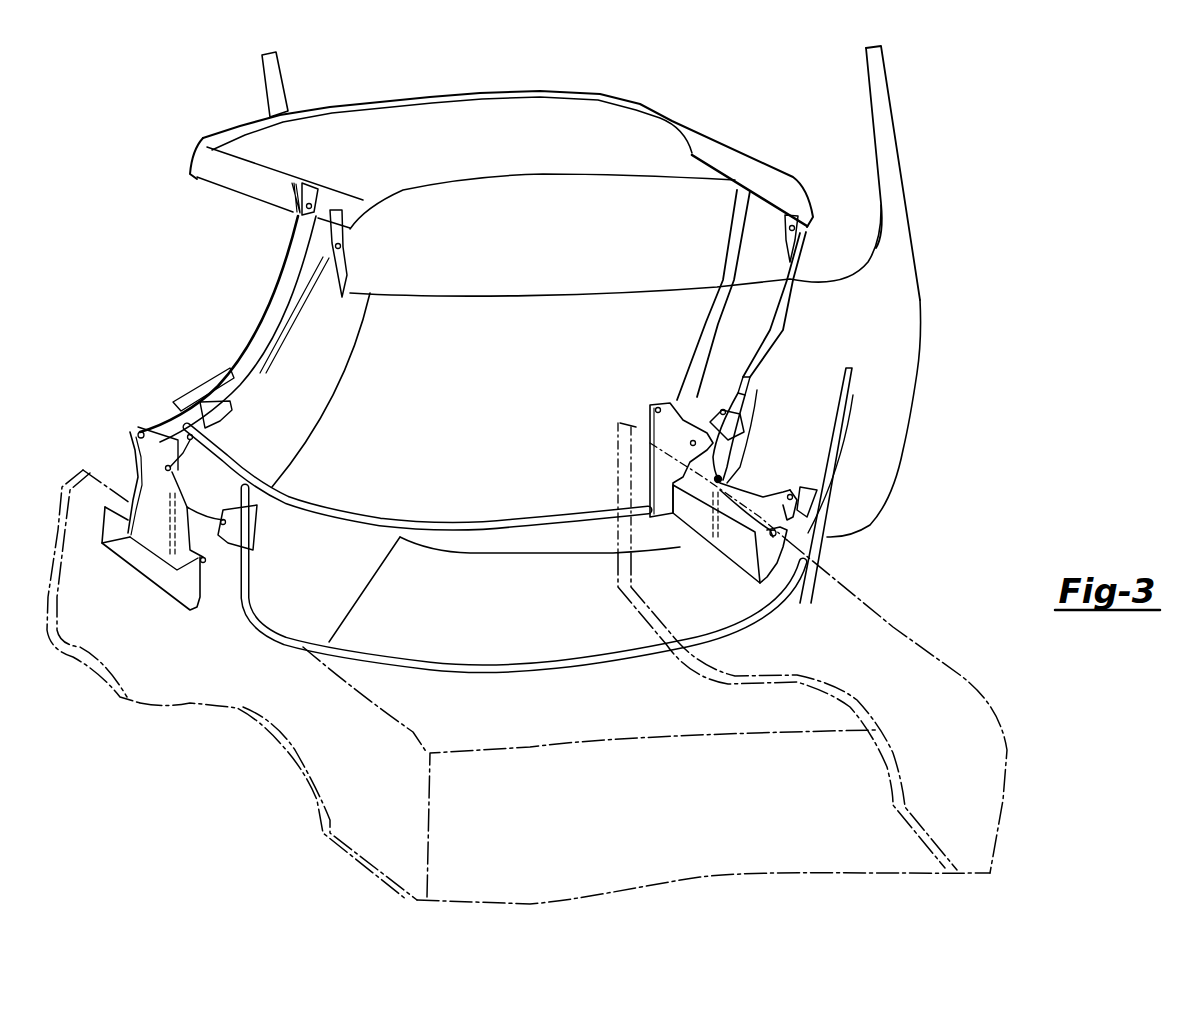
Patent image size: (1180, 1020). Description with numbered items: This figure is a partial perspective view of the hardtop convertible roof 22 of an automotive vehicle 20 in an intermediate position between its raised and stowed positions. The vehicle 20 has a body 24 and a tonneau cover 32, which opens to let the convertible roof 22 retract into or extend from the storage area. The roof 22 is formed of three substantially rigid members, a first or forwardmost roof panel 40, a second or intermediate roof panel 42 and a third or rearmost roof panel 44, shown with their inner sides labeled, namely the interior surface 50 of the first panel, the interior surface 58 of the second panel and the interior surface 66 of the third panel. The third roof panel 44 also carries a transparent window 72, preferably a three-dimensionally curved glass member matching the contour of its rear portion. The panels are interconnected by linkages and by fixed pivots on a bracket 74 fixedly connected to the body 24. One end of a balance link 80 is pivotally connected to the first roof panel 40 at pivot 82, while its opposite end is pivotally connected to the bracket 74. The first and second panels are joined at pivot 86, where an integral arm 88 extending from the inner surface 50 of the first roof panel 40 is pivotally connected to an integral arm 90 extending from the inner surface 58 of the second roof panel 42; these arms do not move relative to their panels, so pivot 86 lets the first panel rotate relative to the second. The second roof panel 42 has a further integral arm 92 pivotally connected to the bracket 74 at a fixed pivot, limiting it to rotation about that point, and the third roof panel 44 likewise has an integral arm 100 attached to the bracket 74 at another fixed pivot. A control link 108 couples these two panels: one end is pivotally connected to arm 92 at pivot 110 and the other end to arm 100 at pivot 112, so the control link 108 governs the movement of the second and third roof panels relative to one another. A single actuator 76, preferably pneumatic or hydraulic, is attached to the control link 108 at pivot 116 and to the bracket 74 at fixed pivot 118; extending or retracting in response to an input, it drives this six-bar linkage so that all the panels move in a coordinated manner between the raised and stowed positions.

The automotive vehicle 20 is at (534, 474).
The hardtop convertible roof 22 is at (538, 381).
The body 24 is at (937, 689).
The tonneau cover 32 is at (908, 261).
The first roof panel 40 is at (608, 130).
The second roof panel 42 is at (382, 402).
The third roof panel 44 is at (415, 615).
The inner surface 50 is at (440, 122).
The inner surface 58 is at (580, 318).
The inner surface 66 is at (325, 566).
The transparent window 72 is at (533, 653).
The bracket 74 is at (130, 553).
The actuator 76 is at (720, 523).
The balance link 80 is at (730, 270).
The pivot 82 is at (313, 207).
The pivot 86 is at (342, 247).
The integral arm 88 is at (788, 218).
The integral arm 90 is at (797, 250).
The integral arm 92 is at (729, 378).
The integral arm 100 is at (230, 552).
The control link 108 is at (740, 440).
The pivot 110 is at (723, 408).
The pivot 112 is at (794, 493).
The pivot 116 is at (723, 479).
The fixed pivot 118 is at (717, 550).